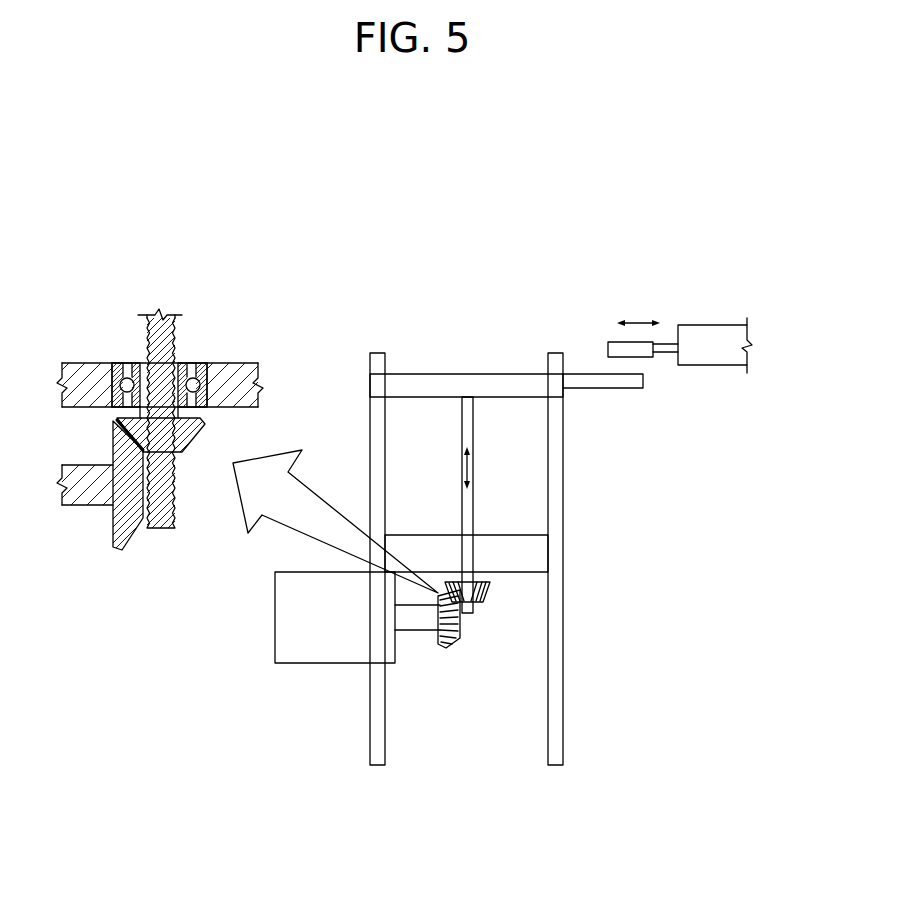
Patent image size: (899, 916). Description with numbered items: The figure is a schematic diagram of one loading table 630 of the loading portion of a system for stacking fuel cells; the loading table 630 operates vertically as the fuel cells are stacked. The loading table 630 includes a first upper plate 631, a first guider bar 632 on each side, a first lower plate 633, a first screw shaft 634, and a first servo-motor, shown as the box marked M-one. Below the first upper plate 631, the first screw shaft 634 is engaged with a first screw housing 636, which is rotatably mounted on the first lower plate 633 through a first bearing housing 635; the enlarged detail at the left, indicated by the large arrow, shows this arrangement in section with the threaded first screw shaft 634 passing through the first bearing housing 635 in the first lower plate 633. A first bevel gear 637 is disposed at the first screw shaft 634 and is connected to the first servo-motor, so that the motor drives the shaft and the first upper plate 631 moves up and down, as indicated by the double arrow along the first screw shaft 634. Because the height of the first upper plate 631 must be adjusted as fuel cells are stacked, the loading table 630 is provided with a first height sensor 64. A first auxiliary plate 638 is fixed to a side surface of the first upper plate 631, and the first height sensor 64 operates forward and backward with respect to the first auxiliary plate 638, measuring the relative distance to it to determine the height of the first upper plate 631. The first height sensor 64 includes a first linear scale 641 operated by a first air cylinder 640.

The loading table 630 is at (417, 285).
The first upper plate 631 is at (485, 382).
The first guider bar 632 is at (376, 355).
The first lower plate 633 is at (535, 555).
The first screw shaft 634 is at (475, 504).
The first bearing housing 635 is at (200, 365).
The first screw housing 636 is at (184, 437).
The first bevel gear 637 is at (486, 597).
The first auxiliary plate 638 is at (607, 382).
The first height sensor 64 is at (673, 298).
The first air cylinder 640 is at (705, 337).
The first linear scale 641 is at (616, 345).